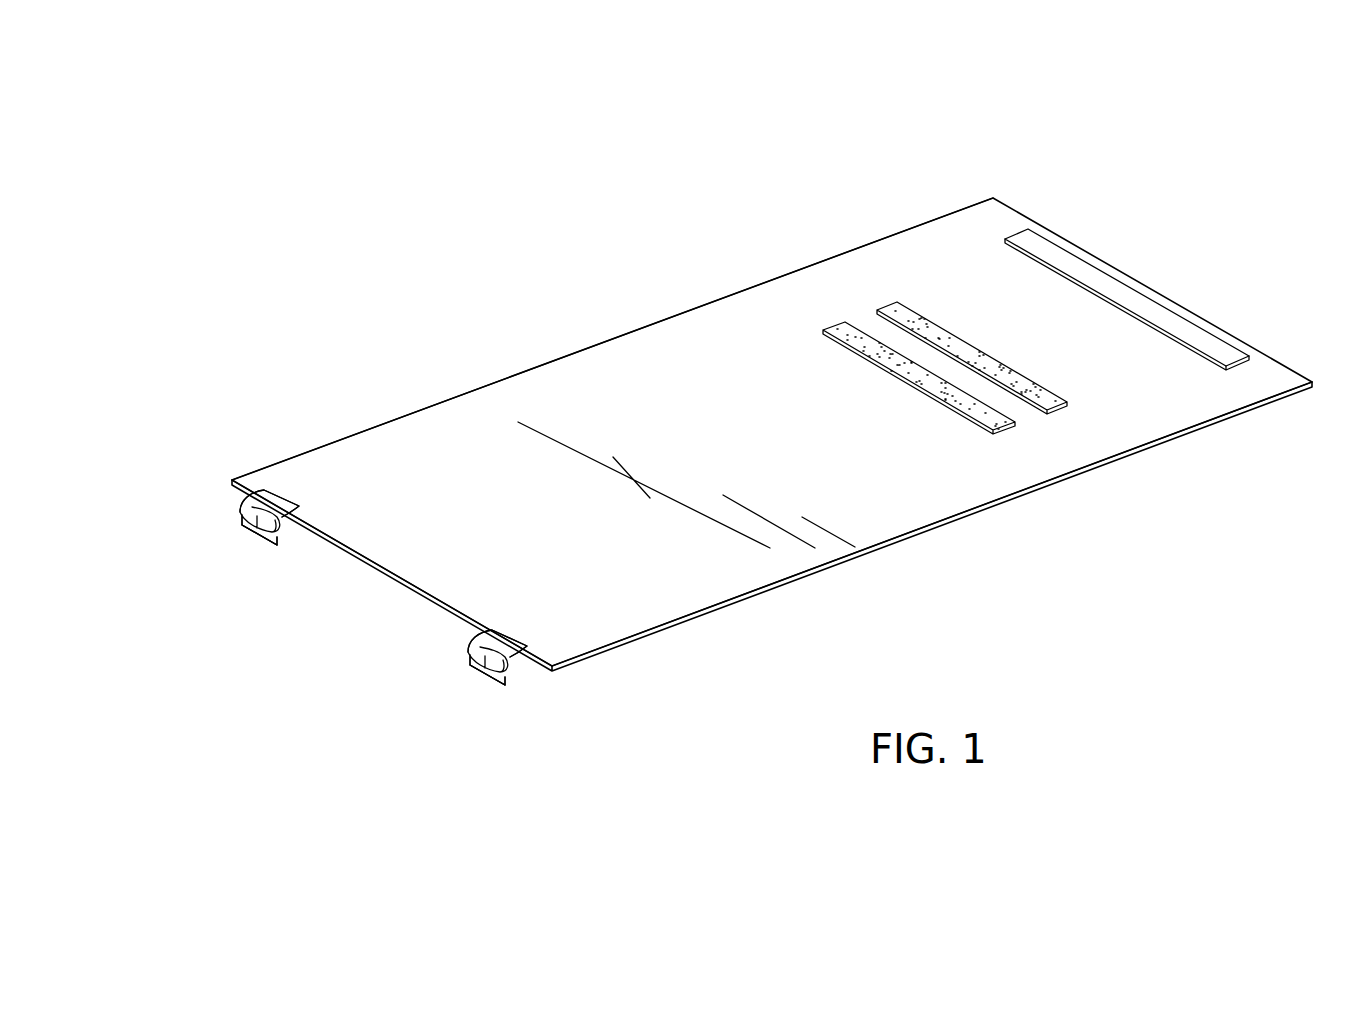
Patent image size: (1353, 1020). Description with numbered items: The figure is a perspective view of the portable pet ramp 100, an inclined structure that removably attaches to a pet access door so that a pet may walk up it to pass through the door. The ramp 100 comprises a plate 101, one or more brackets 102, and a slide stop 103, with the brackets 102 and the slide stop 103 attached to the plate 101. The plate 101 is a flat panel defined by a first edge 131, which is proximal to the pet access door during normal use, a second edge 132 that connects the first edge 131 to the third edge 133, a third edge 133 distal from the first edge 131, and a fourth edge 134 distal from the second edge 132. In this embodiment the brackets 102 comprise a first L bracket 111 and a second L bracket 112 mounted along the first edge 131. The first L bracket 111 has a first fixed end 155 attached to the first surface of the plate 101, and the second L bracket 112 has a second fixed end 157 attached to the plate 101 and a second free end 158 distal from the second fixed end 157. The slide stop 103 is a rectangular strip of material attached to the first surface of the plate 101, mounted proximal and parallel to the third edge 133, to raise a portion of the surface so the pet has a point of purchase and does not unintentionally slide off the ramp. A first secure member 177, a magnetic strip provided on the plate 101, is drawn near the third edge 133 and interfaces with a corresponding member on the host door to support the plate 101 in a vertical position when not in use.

The portable pet ramp 100 is at (390, 190).
The plate 101 is at (643, 325).
The brackets 102 is at (503, 685).
The slide stop 103 is at (877, 310).
The first L bracket 111 is at (473, 665).
The second L bracket 112 is at (262, 540).
The first edge 131 is at (388, 575).
The second edge 132 is at (480, 385).
The third edge 133 is at (1127, 278).
The fourth edge 134 is at (885, 543).
The first fixed end 155 is at (513, 640).
The second fixed end 157 is at (285, 505).
The second free end 158 is at (485, 683).
The first secure member 177 is at (1193, 326).